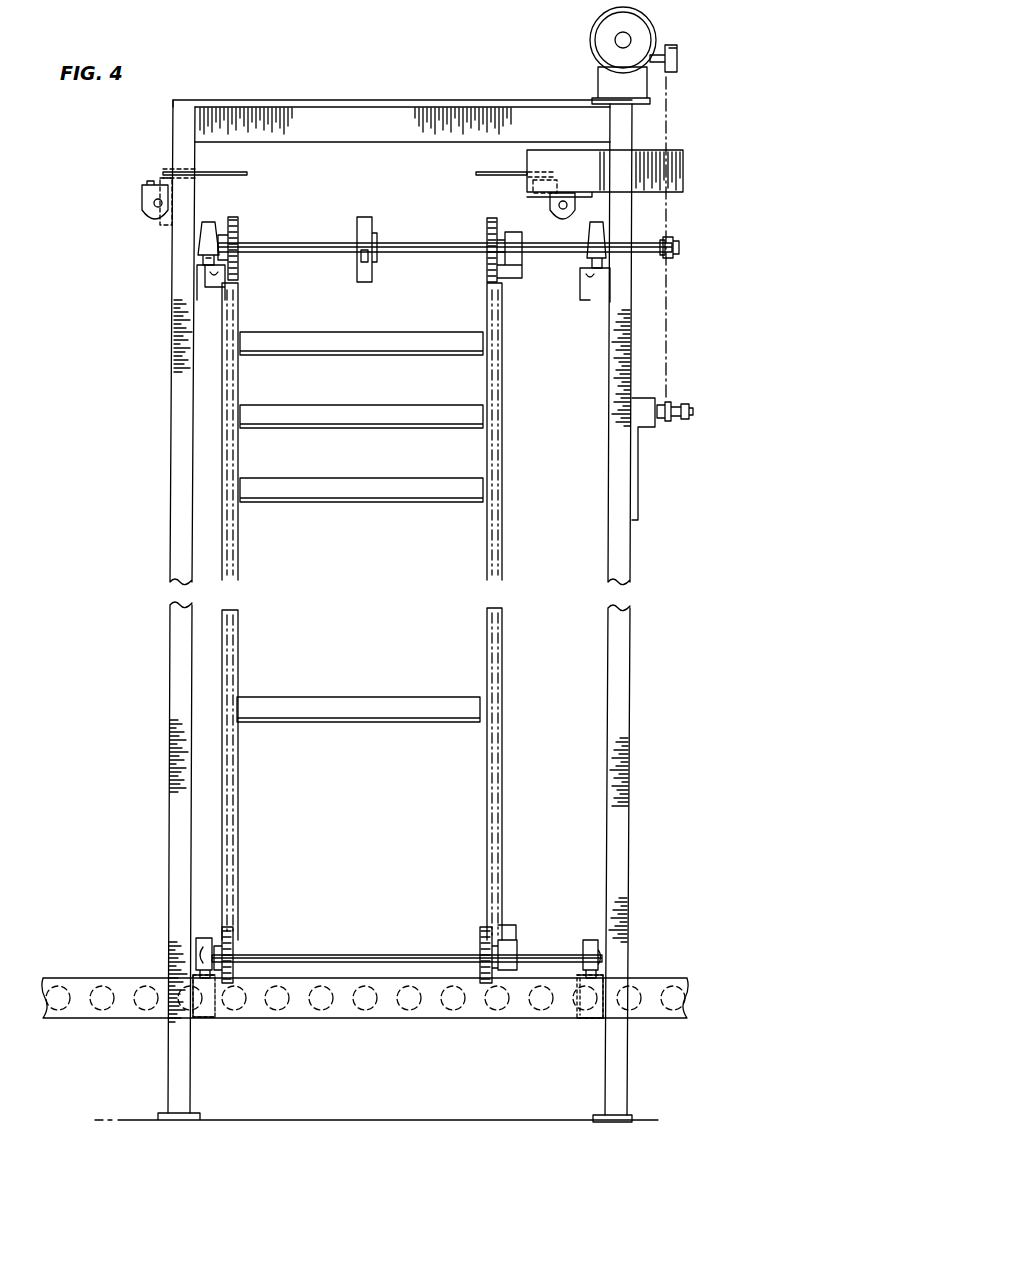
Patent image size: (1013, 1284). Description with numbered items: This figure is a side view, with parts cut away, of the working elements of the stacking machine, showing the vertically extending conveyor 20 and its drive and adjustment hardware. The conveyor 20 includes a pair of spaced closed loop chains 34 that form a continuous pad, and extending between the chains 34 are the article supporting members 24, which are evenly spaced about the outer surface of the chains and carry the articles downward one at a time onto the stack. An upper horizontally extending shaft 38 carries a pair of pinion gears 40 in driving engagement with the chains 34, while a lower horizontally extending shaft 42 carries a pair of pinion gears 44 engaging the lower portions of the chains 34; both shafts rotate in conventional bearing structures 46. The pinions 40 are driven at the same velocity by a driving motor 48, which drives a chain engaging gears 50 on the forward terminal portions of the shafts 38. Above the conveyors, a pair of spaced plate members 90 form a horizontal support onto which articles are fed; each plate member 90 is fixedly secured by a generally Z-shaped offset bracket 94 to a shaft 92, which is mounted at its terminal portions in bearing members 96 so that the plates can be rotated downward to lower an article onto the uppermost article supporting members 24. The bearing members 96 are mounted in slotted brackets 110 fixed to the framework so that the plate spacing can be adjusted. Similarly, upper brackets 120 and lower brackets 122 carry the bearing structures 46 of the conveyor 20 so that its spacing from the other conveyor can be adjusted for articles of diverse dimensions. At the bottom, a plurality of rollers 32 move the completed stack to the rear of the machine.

The conveyor 20 is at (519, 471).
The article supporting members 24 is at (360, 350).
The rollers 32 is at (657, 976).
The closed loop chains 34 is at (488, 306).
The upper horizontally extending shaft 38 is at (427, 243).
The pinion gears 40 is at (236, 220).
The lower horizontally extending shaft 42 is at (399, 954).
The pinion gears 44 is at (234, 938).
The bearing structures 46 is at (211, 221).
The driving motor 48 is at (590, 37).
The gears 50 is at (676, 244).
The plate members 90 is at (240, 170).
The shafts 92 is at (154, 202).
The offset bracket 94 is at (162, 178).
The bearing members 96 is at (144, 215).
The brackets 110 is at (680, 152).
The brackets 120 is at (206, 297).
The brackets 122 is at (205, 1017).